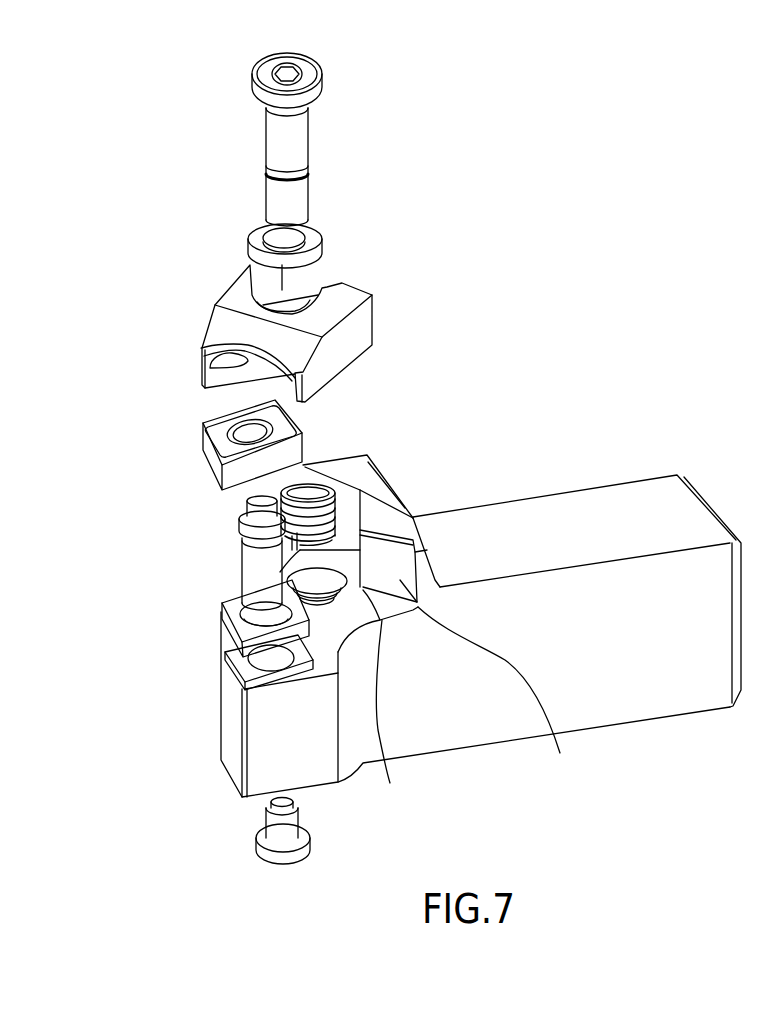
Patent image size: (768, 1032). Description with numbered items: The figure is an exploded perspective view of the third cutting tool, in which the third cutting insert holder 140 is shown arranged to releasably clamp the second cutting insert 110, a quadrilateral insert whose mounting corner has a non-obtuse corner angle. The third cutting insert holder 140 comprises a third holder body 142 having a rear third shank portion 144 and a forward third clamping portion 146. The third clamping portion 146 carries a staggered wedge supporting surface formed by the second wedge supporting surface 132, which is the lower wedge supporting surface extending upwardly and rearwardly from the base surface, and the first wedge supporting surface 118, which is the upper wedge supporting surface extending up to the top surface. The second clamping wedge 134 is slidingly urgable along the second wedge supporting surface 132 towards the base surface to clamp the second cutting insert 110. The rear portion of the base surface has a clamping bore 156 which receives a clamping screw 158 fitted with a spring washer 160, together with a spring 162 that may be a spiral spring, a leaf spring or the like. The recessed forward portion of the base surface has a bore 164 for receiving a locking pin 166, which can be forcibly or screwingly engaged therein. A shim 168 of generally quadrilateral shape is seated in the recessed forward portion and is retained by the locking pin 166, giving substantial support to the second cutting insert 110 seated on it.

The second cutting insert 110 is at (207, 418).
The first wedge supporting surface 118 is at (386, 510).
The second wedge supporting surface 132 is at (560, 753).
The second clamping wedge 134 is at (358, 335).
The third cutting insert holder 140 is at (514, 160).
The third holder body 142 is at (556, 505).
The third shank portion 144 is at (627, 505).
The third clamping portion 146 is at (130, 508).
The clamping bore 156 is at (390, 783).
The clamping screw 158 is at (313, 72).
The spring washer 160 is at (314, 235).
The spring 162 is at (306, 478).
The bore 164 is at (263, 662).
The locking pin 166 is at (252, 564).
The shim 168 is at (243, 628).